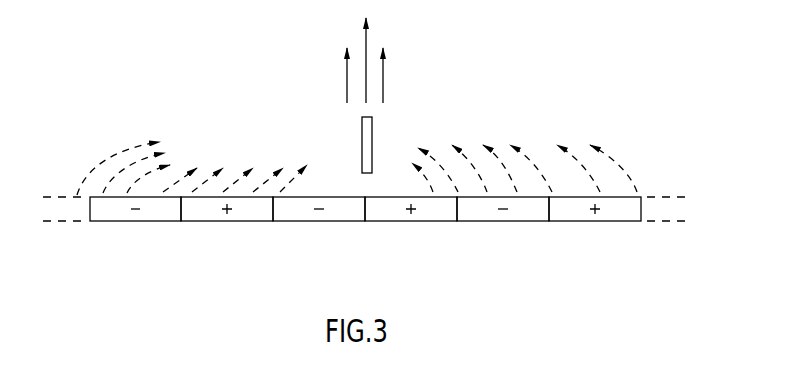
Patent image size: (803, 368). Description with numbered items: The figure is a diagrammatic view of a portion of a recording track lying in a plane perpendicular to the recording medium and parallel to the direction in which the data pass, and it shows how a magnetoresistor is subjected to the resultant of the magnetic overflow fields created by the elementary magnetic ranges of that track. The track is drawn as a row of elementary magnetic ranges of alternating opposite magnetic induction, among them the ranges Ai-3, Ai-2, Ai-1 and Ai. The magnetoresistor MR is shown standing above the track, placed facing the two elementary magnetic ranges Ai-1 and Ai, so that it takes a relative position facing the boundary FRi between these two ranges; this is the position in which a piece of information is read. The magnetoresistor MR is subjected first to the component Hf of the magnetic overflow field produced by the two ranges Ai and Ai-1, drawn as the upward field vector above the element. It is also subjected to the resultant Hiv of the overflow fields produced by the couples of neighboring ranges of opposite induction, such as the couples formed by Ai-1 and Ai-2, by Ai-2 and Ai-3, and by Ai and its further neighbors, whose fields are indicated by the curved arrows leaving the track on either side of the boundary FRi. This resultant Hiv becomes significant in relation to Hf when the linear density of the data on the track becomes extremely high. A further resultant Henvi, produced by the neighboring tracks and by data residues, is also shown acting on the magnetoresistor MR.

The elementary magnetic range Ai-3 is at (120, 204).
The elementary magnetic range Ai-2 is at (232, 217).
The elementary magnetic range Ai-1 is at (319, 216).
The boundary FRi is at (401, 232).
The elementary magnetic range Ai is at (446, 206).
The magnetoresistor MR is at (372, 117).
The resultant of the magnetic overflow fields Hiv is at (327, 73).
The component of the magnetic overflow field Hf is at (379, 55).
The resultant of the magnetic overflow fields of neighboring tracks Henvi is at (415, 73).